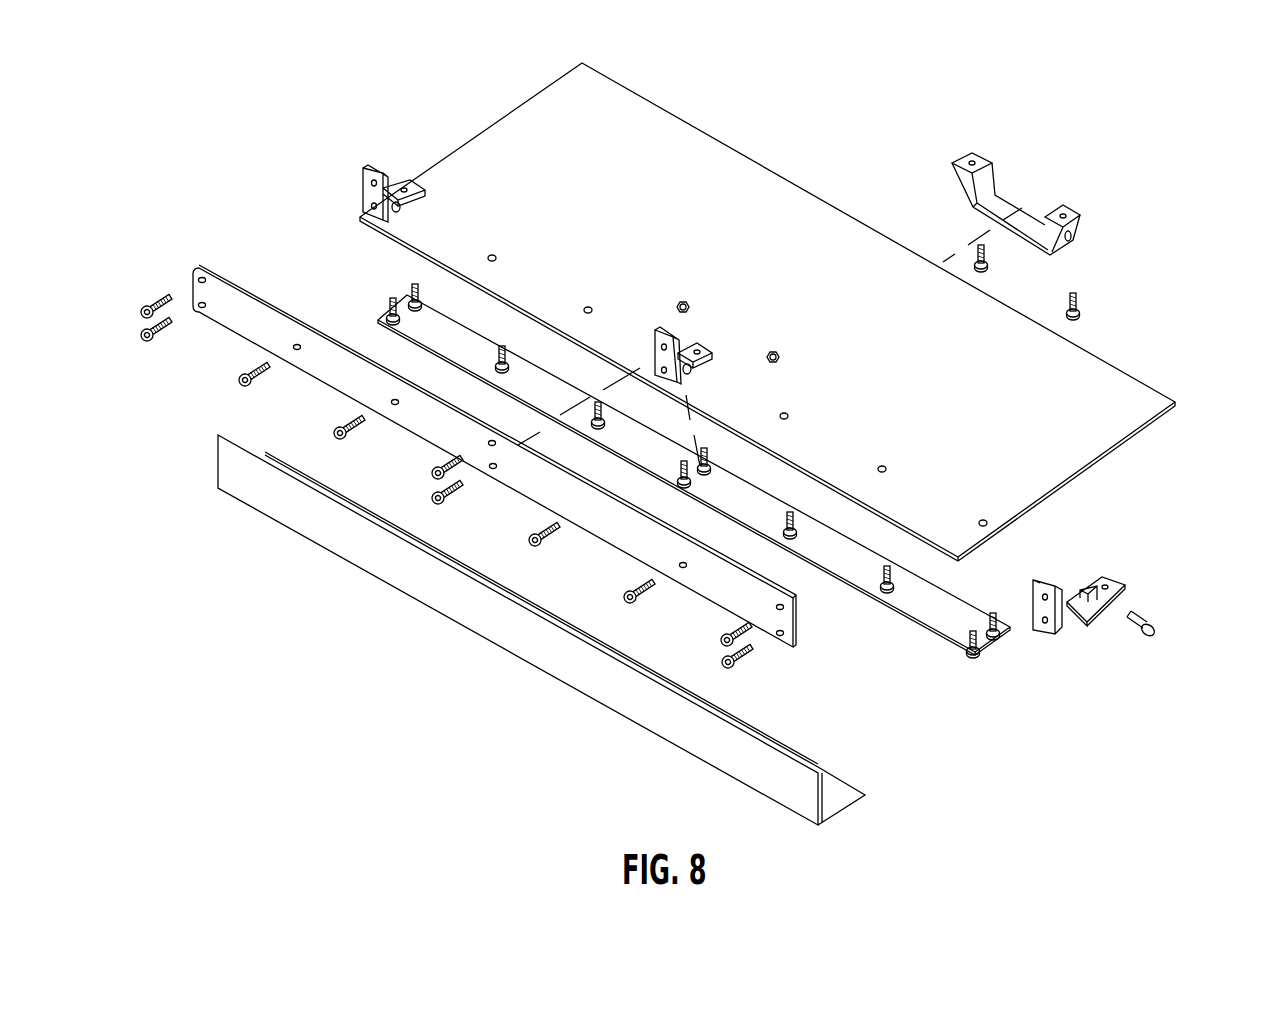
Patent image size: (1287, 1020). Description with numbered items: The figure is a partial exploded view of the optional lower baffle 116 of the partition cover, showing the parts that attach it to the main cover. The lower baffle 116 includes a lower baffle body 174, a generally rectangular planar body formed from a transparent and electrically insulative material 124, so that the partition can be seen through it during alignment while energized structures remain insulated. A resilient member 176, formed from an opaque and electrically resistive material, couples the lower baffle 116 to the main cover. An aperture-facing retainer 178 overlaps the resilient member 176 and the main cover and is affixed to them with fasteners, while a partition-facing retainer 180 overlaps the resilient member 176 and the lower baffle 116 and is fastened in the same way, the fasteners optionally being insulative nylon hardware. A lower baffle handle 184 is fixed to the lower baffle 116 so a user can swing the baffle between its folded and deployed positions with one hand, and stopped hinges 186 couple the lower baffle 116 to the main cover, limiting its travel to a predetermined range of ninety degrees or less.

The lower baffle 116 is at (1115, 394).
The transparent and electrically insulative material 124 is at (759, 216).
The lower baffle body 174 is at (538, 286).
The resilient member 176 is at (397, 596).
The aperture-facing retainer 178 is at (210, 265).
The partition-facing retainer 180 is at (983, 657).
The lower baffle handle 184 is at (1011, 196).
The stopped hinges 186 is at (368, 166).